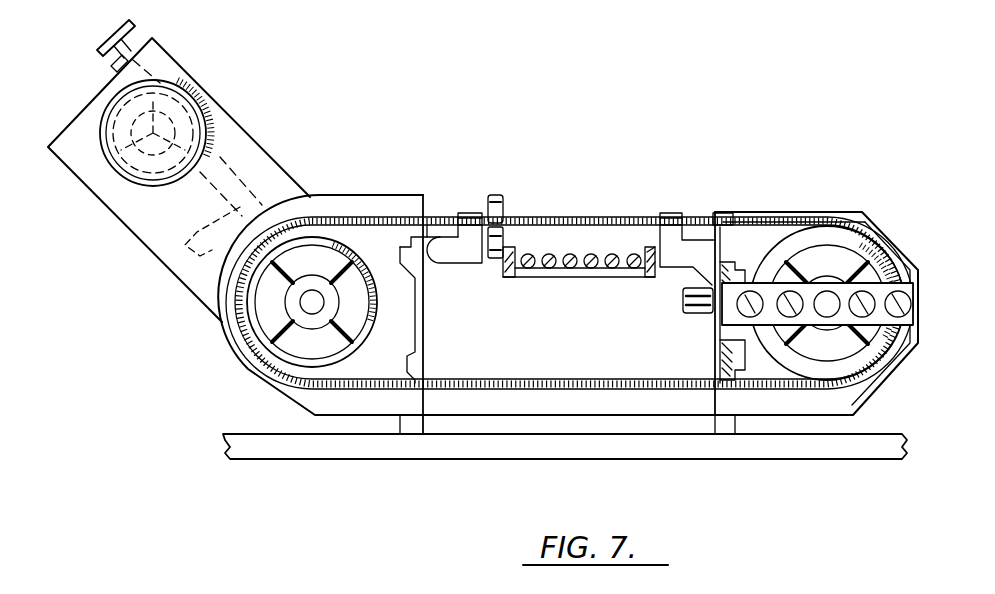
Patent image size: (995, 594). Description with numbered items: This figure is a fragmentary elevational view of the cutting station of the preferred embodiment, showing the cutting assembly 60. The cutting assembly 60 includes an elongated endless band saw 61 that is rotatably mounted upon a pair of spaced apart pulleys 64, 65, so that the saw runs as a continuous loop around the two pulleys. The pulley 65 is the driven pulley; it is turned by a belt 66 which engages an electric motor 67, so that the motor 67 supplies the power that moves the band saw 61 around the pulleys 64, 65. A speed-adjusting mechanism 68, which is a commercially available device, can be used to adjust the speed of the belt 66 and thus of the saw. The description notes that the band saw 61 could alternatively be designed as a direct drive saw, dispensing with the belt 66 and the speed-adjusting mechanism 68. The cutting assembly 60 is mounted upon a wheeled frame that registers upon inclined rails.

The cutting assembly 60 is at (390, 195).
The endless band saw 61 is at (600, 223).
The pulley 64 is at (840, 230).
The pulley 65 is at (283, 367).
The belt 66 is at (183, 243).
The electric motor 67 is at (103, 197).
The speed-adjusting mechanism 68 is at (123, 23).